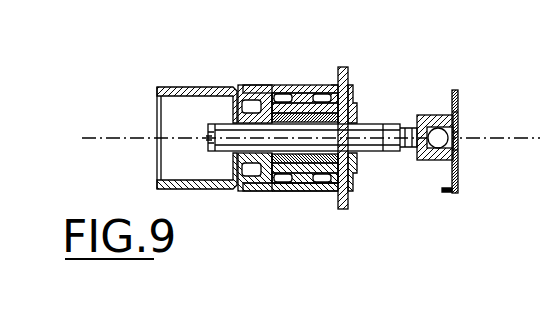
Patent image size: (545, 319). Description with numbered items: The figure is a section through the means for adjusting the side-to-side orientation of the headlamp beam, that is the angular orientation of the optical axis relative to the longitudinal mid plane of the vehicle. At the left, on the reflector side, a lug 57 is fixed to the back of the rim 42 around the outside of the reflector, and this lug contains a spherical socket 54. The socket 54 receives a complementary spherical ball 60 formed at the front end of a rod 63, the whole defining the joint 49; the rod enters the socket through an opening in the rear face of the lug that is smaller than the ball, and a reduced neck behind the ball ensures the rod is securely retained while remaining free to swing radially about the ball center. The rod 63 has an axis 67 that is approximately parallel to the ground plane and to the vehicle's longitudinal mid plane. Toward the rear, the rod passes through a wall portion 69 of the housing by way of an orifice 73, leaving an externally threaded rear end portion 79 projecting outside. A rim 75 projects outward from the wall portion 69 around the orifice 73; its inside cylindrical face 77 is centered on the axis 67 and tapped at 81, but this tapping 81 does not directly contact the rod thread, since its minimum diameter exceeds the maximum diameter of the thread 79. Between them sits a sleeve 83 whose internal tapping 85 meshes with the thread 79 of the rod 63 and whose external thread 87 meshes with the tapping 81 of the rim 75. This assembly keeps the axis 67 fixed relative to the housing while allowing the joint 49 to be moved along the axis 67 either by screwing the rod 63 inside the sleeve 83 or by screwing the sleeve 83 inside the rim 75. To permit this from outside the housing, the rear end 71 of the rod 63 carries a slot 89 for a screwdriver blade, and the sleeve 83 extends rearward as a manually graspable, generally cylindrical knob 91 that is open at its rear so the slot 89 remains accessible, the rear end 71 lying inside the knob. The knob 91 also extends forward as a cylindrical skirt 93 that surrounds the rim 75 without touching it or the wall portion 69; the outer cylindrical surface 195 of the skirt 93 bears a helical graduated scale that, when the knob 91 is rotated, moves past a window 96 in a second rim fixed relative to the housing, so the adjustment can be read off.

The rim 42 is at (455, 192).
The joint 49 is at (460, 152).
The spherical socket 54 is at (459, 113).
The lug 57 is at (436, 116).
The spherical ball 60 is at (460, 131).
The rod 63 is at (383, 152).
The axis 67 is at (381, 124).
The wall portion 69 is at (332, 195).
The rear end 71 is at (209, 147).
The orifice 73 is at (361, 160).
The rim 75 is at (255, 184).
The inside cylindrical face 77 is at (359, 110).
The externally threaded rear end portion 79 is at (280, 97).
The tapping 81 is at (318, 105).
The sleeve 83 is at (300, 110).
The internal tapping 85 is at (258, 124).
The external thread 87 is at (333, 84).
The slot 89 is at (209, 137).
The knob 91 is at (182, 87).
The cylindrical skirt 93 is at (268, 94).
The window 96 is at (288, 190).
The outer cylindrical surface 195 is at (244, 100).